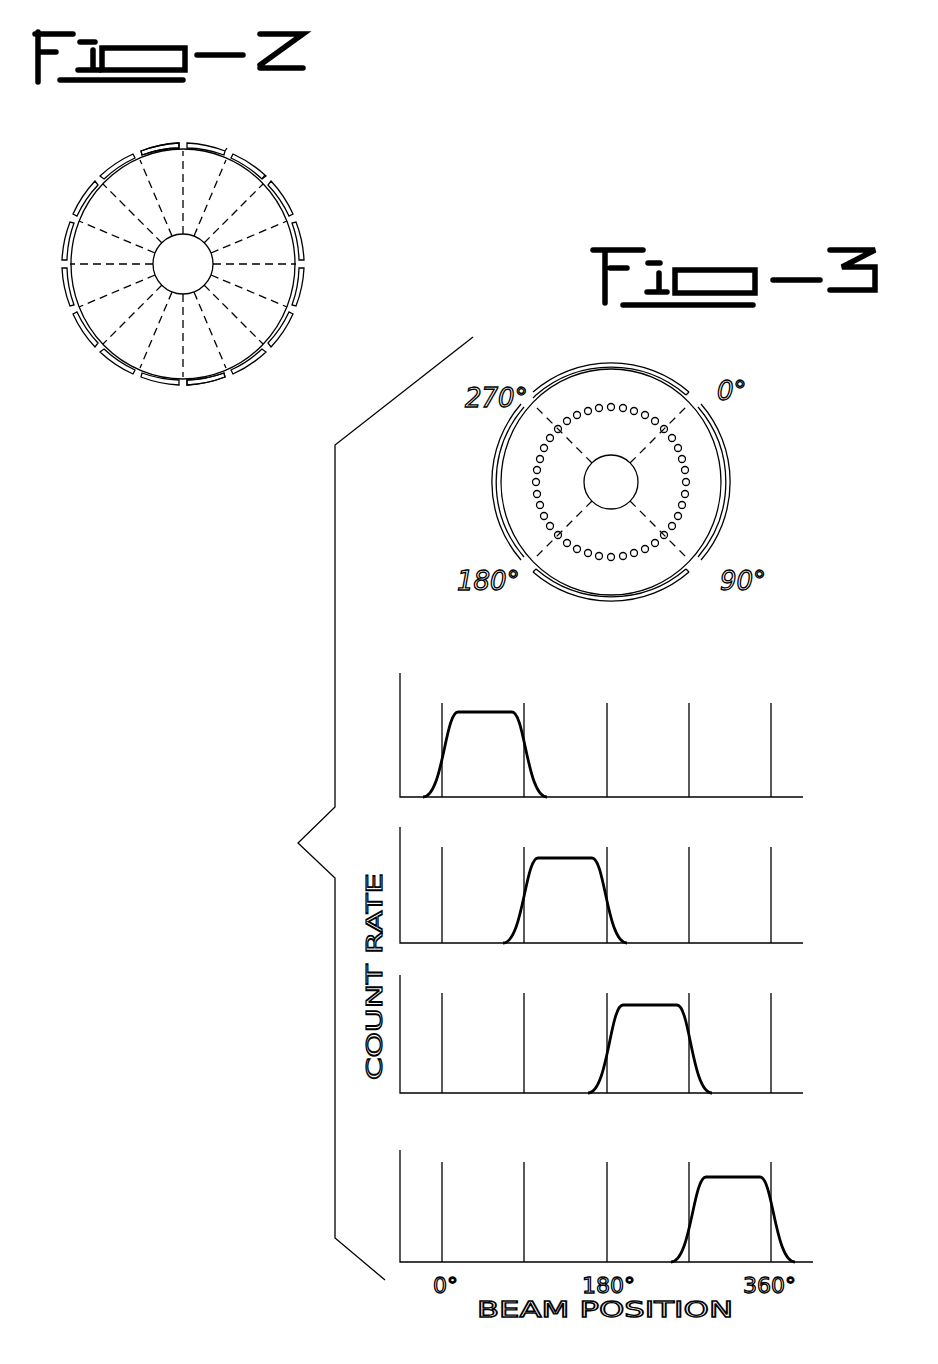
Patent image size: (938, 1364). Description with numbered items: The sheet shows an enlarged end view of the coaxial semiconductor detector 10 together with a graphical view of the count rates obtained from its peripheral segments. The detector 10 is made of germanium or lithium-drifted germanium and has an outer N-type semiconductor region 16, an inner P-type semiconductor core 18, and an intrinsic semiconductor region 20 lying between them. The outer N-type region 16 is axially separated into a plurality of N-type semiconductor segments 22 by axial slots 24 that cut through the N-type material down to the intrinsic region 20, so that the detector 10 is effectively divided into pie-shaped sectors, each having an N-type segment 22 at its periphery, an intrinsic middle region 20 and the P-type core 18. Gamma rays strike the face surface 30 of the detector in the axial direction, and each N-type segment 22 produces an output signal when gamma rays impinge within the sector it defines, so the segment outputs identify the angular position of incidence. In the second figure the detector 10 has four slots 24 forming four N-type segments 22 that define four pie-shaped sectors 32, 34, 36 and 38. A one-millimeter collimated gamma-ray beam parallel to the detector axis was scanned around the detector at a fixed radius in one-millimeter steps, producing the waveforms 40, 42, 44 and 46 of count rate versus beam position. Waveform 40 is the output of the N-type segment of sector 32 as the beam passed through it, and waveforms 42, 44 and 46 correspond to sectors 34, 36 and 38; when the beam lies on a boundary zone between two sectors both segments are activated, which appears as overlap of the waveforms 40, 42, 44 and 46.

In FIG. 2, the coaxial semiconductor detector 10 is at (323, 240).
In FIG. 2, the outer N-type semiconductor region 16 is at (208, 136).
In FIG. 2, the inner P-type semiconductor core 18 is at (196, 277).
In FIG. 3, the inner P-type semiconductor core 18 is at (624, 495).
In FIG. 2, the intrinsic semiconductor region 20 is at (231, 246).
In FIG. 2, the N-type semiconductor segments 22 is at (83, 192).
In FIG. 3, the N-type semiconductor segments 22 is at (590, 367).
In FIG. 2, the axial slots 24 is at (265, 176).
In FIG. 3, the axial slots 24 is at (533, 398).
In FIG. 2, the face surface 30 is at (200, 353).
In FIG. 3, the pie-shaped sector 32 is at (707, 507).
In FIG. 3, the pie-shaped sector 34 is at (573, 577).
In FIG. 3, the pie-shaped sector 36 is at (510, 470).
In FIG. 3, the pie-shaped sector 38 is at (637, 383).
In FIG. 3, the waveform 40 is at (492, 688).
In FIG. 3, the waveform 42 is at (582, 836).
In FIG. 3, the waveform 44 is at (659, 982).
In FIG. 3, the waveform 46 is at (746, 1153).